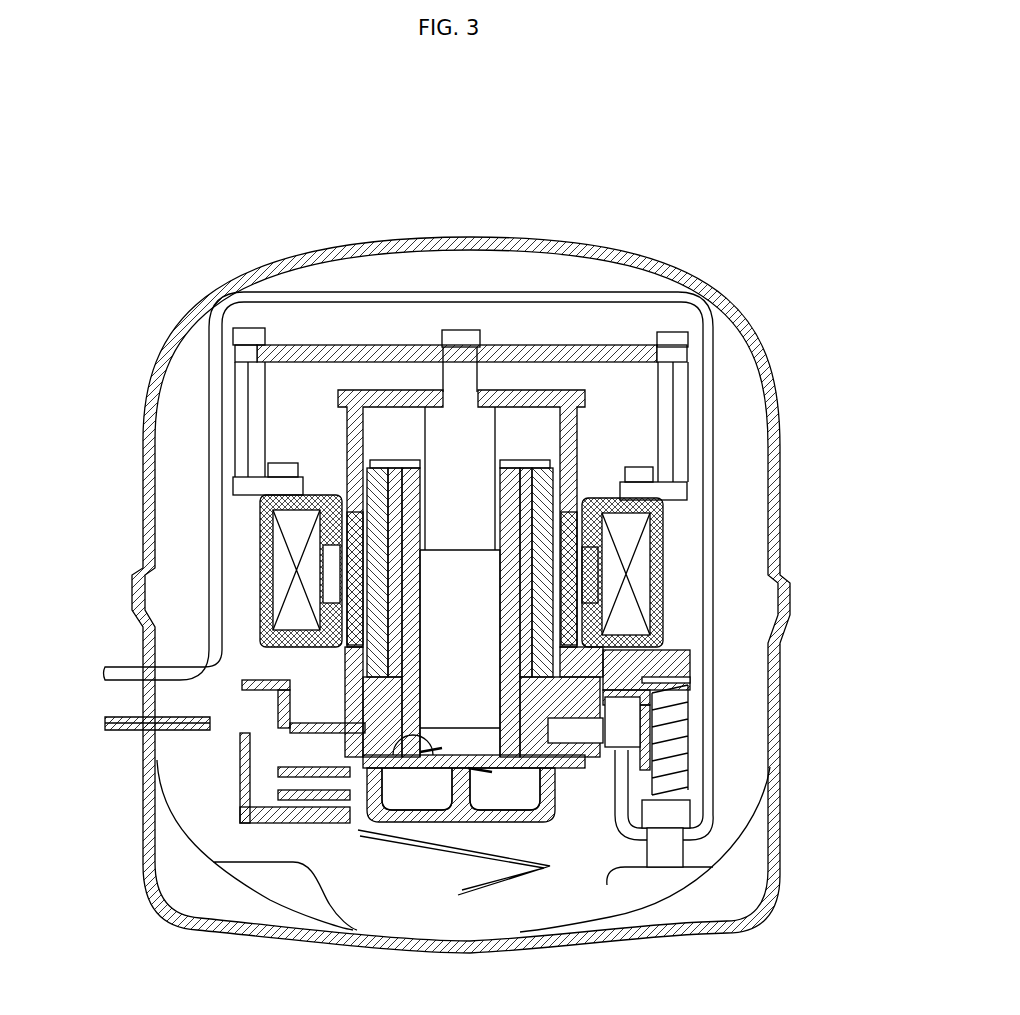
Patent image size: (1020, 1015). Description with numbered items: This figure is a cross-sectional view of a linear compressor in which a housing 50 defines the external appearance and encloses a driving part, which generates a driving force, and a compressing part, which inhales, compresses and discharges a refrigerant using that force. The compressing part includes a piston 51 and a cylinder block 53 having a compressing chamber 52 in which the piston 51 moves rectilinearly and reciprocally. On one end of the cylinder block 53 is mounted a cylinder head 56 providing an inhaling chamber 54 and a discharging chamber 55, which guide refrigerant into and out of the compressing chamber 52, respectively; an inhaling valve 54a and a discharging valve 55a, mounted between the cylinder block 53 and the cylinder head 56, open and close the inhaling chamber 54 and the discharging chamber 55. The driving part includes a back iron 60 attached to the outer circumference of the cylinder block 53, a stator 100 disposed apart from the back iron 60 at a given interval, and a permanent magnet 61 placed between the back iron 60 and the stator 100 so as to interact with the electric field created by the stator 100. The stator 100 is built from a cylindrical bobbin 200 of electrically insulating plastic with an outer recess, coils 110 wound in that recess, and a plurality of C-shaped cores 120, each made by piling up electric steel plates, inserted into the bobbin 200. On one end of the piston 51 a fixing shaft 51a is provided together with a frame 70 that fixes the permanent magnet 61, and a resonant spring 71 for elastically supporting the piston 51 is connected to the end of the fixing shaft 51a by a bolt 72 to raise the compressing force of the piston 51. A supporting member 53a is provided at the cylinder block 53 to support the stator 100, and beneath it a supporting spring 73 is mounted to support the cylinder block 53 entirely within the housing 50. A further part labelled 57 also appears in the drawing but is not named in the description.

The housing 50 is at (705, 296).
The resonant spring 71 is at (278, 347).
The bolt 72 is at (465, 330).
The frame 70 is at (352, 445).
The back iron 60 is at (548, 478).
The permanent magnet 61 is at (572, 540).
The stator 100 is at (670, 572).
The coils 110 is at (290, 535).
The cores 120 is at (322, 550).
The bobbin 200 is at (330, 577).
The piston 51 is at (448, 557).
The fixing shaft 51a is at (470, 373).
The cylinder head 57 is at (535, 768).
The supporting member 53a is at (647, 660).
The supporting spring 73 is at (690, 728).
The cylinder block 53 is at (370, 743).
The compressing chamber 52 is at (497, 770).
The cylinder head 56 is at (553, 810).
The inhaling valve 54a is at (435, 802).
The discharging chamber 55 is at (498, 802).
The inhaling chamber 54 is at (413, 737).
The discharging valve 55a is at (487, 772).